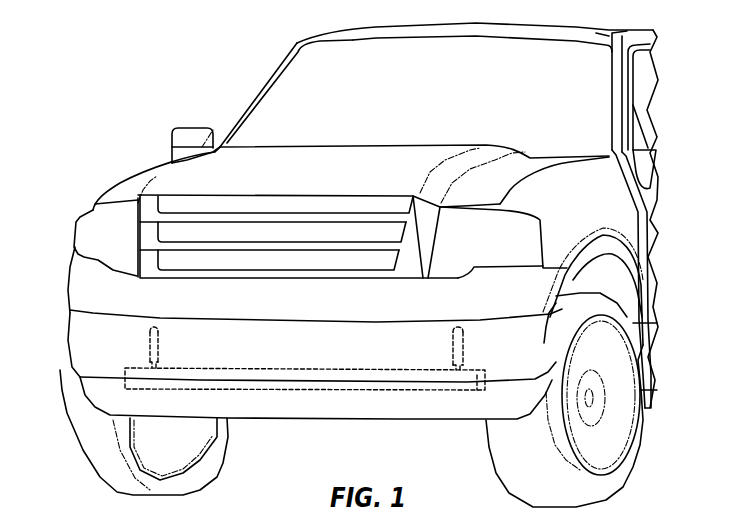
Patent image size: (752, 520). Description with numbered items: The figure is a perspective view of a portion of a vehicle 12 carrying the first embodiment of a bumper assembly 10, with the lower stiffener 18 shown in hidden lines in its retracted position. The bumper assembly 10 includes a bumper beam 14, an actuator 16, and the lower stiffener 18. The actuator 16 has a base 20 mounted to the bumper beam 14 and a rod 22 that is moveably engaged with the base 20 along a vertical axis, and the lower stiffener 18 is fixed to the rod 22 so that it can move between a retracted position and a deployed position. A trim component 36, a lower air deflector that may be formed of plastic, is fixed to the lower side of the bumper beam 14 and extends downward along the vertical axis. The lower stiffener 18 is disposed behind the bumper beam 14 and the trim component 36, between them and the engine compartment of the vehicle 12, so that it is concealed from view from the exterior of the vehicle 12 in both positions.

The bumper assembly 10 is at (56, 320).
The vehicle 12 is at (265, 62).
The bumper beam 14 is at (67, 325).
The actuator 16 is at (170, 347).
The lower stiffener 18 is at (302, 368).
The base 20 is at (148, 338).
The rod 22 is at (144, 361).
The trim component 36 is at (371, 409).